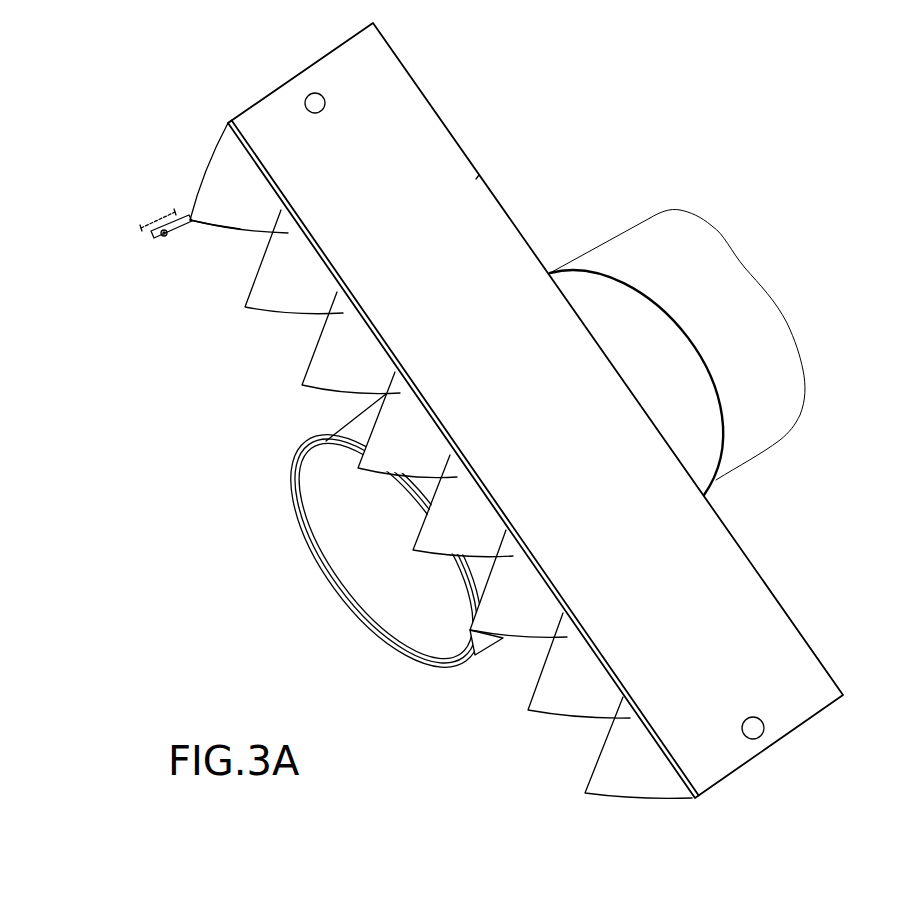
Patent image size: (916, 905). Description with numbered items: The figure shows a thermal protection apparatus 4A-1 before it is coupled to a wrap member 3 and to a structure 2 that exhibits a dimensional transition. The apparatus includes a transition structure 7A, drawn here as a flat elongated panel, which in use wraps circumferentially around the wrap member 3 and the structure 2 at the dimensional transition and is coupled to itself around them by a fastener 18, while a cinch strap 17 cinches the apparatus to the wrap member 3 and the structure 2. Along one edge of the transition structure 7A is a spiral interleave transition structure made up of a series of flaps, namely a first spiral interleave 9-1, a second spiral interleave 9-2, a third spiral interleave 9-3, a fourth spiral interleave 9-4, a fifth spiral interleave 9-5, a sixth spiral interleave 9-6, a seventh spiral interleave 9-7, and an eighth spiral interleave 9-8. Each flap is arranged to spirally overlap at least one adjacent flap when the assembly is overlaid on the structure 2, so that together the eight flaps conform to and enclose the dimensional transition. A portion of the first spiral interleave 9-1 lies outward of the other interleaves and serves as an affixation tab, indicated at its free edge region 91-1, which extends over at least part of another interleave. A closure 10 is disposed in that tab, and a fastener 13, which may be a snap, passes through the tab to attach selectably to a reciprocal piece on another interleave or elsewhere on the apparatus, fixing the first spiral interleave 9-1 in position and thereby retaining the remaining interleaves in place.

The transition structure 7A is at (461, 101).
The thermal protection apparatus 4A-1 is at (472, 182).
The cinch strap 17 is at (230, 122).
The fastener 18 is at (320, 113).
The structure 2 is at (340, 575).
The wrap member 3 is at (707, 453).
The first spiral interleave 9-1 is at (216, 192).
The second spiral interleave 9-2 is at (613, 768).
The third spiral interleave 9-3 is at (547, 680).
The fourth spiral interleave 9-4 is at (517, 580).
The fifth spiral interleave 9-5 is at (477, 512).
The sixth spiral interleave 9-6 is at (417, 430).
The seventh spiral interleave 9-7 is at (330, 355).
The eighth spiral interleave 9-8 is at (283, 302).
The fin free edge 91-1 is at (176, 233).
The closure 10 is at (152, 213).
The fastener 13 is at (165, 235).